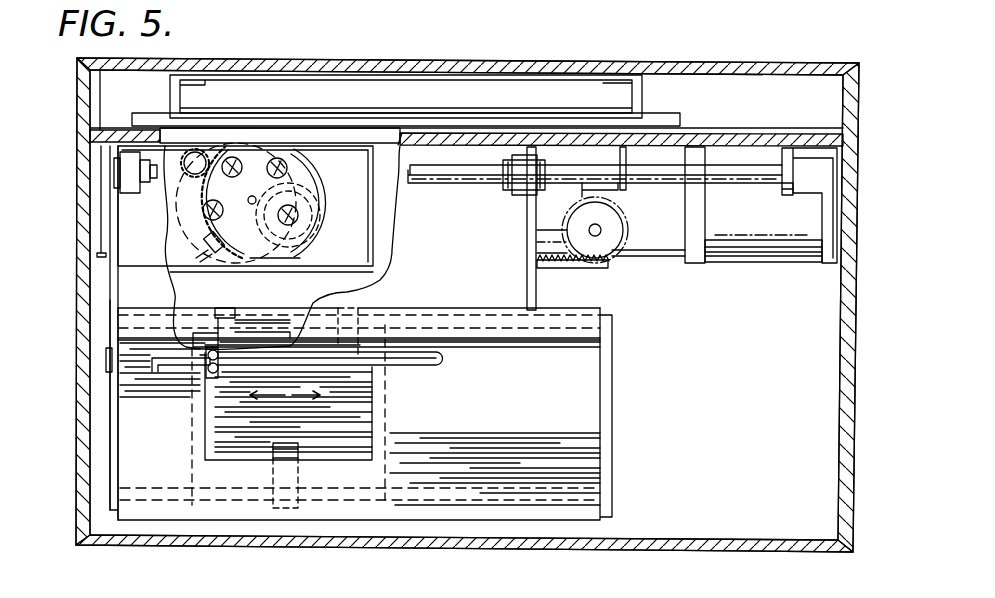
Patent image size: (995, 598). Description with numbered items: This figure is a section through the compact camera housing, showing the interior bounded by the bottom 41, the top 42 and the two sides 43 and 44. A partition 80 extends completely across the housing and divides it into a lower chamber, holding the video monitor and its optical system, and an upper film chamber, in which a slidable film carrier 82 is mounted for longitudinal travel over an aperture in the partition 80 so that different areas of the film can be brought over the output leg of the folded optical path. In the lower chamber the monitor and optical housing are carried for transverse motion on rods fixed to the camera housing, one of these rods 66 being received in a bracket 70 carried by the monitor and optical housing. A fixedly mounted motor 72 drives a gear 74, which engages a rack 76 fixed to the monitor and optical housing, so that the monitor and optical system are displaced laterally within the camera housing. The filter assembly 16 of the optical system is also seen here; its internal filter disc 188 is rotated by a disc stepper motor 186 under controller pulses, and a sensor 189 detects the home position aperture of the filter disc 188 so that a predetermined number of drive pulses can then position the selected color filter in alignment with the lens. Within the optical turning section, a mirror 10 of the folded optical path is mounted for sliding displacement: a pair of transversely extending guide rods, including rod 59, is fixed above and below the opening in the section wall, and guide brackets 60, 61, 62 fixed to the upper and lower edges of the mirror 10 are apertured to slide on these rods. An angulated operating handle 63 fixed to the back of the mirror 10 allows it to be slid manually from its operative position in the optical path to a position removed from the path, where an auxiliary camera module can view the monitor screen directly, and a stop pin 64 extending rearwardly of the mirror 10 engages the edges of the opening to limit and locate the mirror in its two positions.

The mirror 10 is at (372, 412).
The filter assembly 16 is at (318, 183).
The bottom 41 is at (357, 549).
The top 42 is at (642, 58).
The side 43 is at (77, 345).
The side 44 is at (856, 362).
The rod 59 is at (255, 308).
The guide bracket 60 is at (222, 308).
The guide bracket 61 is at (355, 305).
The guide bracket 62 is at (300, 470).
The angulated operating handle 63 is at (178, 372).
The stop pin 64 is at (215, 378).
The rod 66 is at (738, 184).
The bracket 70 is at (512, 196).
The motor 72 is at (748, 263).
The gear 74 is at (615, 257).
The rack 76 is at (575, 270).
The partition 80 is at (728, 133).
The film carrier 82 is at (646, 100).
The disc stepper motor 186 is at (178, 214).
The filter disc 188 is at (303, 244).
The sensor 189 is at (208, 243).